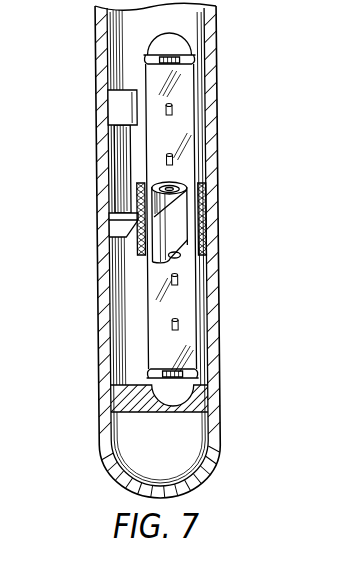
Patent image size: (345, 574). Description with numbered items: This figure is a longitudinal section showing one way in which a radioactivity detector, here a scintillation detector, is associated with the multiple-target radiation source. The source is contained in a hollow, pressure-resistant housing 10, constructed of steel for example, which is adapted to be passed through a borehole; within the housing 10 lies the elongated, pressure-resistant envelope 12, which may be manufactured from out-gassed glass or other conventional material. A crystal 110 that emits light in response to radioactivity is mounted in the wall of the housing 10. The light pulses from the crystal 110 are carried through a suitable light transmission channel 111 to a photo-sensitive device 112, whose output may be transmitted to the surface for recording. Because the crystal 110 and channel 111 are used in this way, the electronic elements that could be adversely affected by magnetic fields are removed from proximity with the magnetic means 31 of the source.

The housing 10 is at (219, 112).
The envelope 12 is at (150, 352).
The magnetic means 31 is at (140, 250).
The crystal 110 is at (107, 221).
The light transmission channel 111 is at (118, 162).
The photo-sensitive device 112 is at (114, 106).